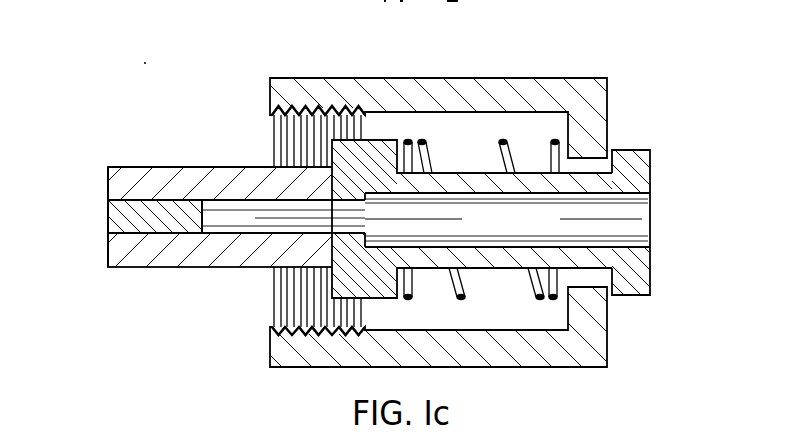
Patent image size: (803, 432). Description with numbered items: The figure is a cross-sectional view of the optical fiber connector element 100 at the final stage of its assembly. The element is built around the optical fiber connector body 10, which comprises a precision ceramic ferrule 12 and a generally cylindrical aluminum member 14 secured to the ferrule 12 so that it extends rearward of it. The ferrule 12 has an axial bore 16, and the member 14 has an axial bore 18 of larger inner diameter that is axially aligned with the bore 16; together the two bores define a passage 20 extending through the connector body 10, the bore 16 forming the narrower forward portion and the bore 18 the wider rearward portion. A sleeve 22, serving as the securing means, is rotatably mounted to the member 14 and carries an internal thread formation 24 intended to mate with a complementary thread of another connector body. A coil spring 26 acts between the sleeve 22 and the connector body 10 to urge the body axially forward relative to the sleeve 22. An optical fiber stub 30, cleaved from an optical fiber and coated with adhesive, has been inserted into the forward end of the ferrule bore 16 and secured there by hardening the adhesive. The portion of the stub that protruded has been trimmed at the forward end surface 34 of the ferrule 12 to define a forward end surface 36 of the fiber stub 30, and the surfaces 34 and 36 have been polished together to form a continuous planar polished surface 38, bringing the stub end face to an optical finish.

The optical fiber connector body 10 is at (465, 75).
The precision ceramic ferrule 12 is at (200, 167).
The generally cylindrical aluminum member 14 is at (650, 165).
The axial bore 16 is at (243, 233).
The axial bore 18 is at (642, 214).
The passage 20 is at (577, 223).
The sleeve 22 is at (372, 75).
The internal thread formation 24 is at (293, 118).
The coil spring 26 is at (560, 148).
The optical fiber stub 30 is at (148, 212).
The forward end surface of the ferrule 34 is at (108, 182).
The forward end surface of the fiber stub 36 is at (108, 218).
The continuous planar polished surface 38 is at (62, 172).
The optical fiber connector element 100 is at (546, 65).